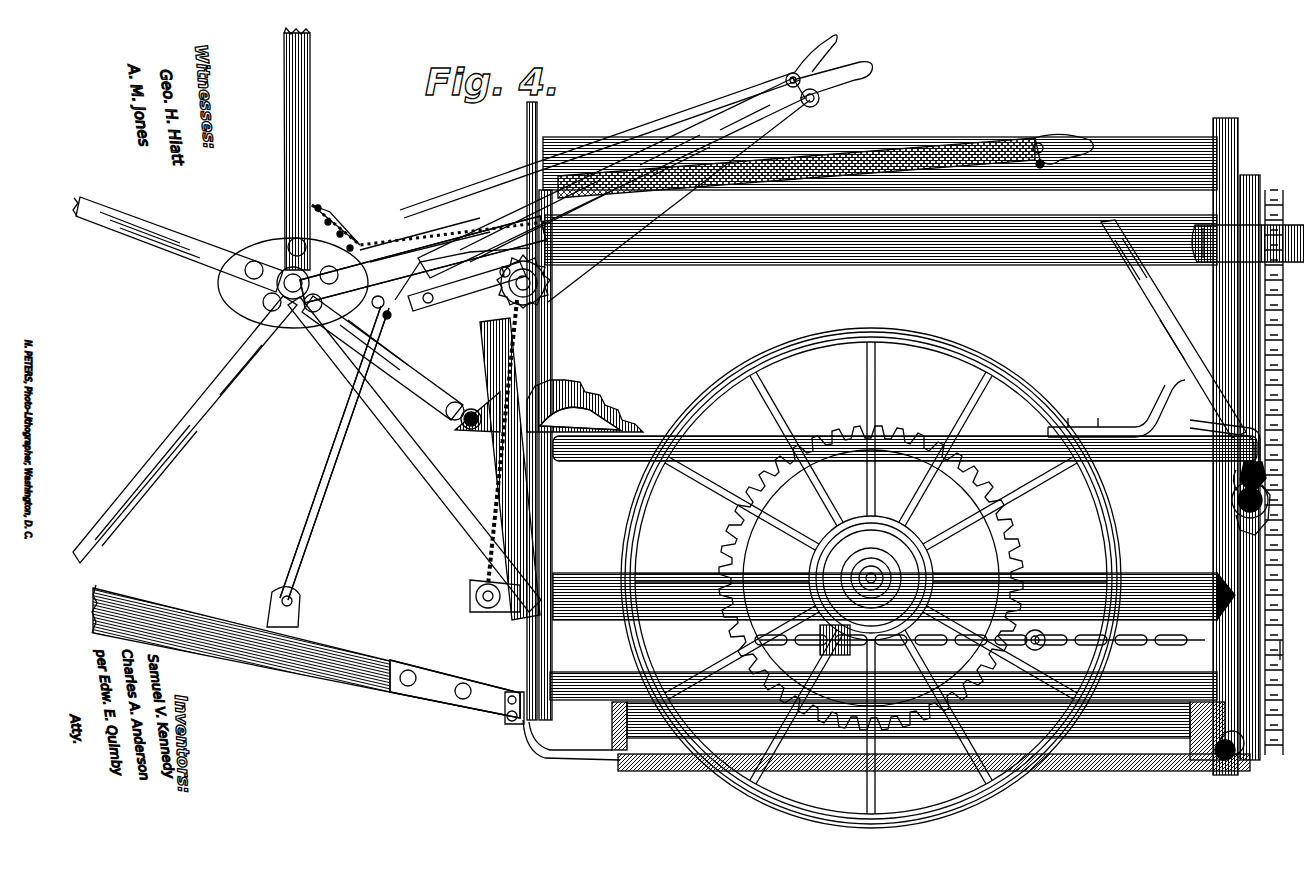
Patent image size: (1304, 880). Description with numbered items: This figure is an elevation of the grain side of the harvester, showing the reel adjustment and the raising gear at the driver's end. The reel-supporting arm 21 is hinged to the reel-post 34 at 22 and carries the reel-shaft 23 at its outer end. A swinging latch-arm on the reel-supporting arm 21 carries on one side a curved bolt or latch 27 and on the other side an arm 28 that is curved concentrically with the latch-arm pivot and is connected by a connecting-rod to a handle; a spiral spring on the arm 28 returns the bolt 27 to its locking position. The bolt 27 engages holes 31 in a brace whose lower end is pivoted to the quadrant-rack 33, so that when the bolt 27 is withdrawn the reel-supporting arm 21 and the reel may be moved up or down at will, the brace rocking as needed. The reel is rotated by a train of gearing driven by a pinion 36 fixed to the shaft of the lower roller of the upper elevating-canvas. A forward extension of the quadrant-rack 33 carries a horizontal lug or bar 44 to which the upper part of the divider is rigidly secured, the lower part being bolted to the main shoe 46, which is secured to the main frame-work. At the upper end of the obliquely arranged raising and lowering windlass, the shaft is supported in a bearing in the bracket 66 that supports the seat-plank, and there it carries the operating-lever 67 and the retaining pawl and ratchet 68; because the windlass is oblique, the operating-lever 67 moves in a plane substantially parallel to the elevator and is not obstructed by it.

The reel-supporting arm 21 is at (462, 282).
The hinge of reel-supporting arm 22 is at (546, 290).
The reel-shaft 23 is at (280, 290).
The curved bolt or latch 27 is at (374, 312).
The arm of latch-arm 28 is at (423, 259).
The holes of brace 31 is at (333, 220).
The quadrant-rack 33 is at (468, 392).
The reel-post 34 is at (505, 460).
The pinion 36 is at (412, 360).
The horizontal lug or bar 44 is at (472, 428).
The main shoe 46 is at (508, 725).
The bracket 66 is at (1268, 475).
The operating-lever 67 is at (1114, 296).
The retaining pawl and ratchet 68 is at (1268, 506).